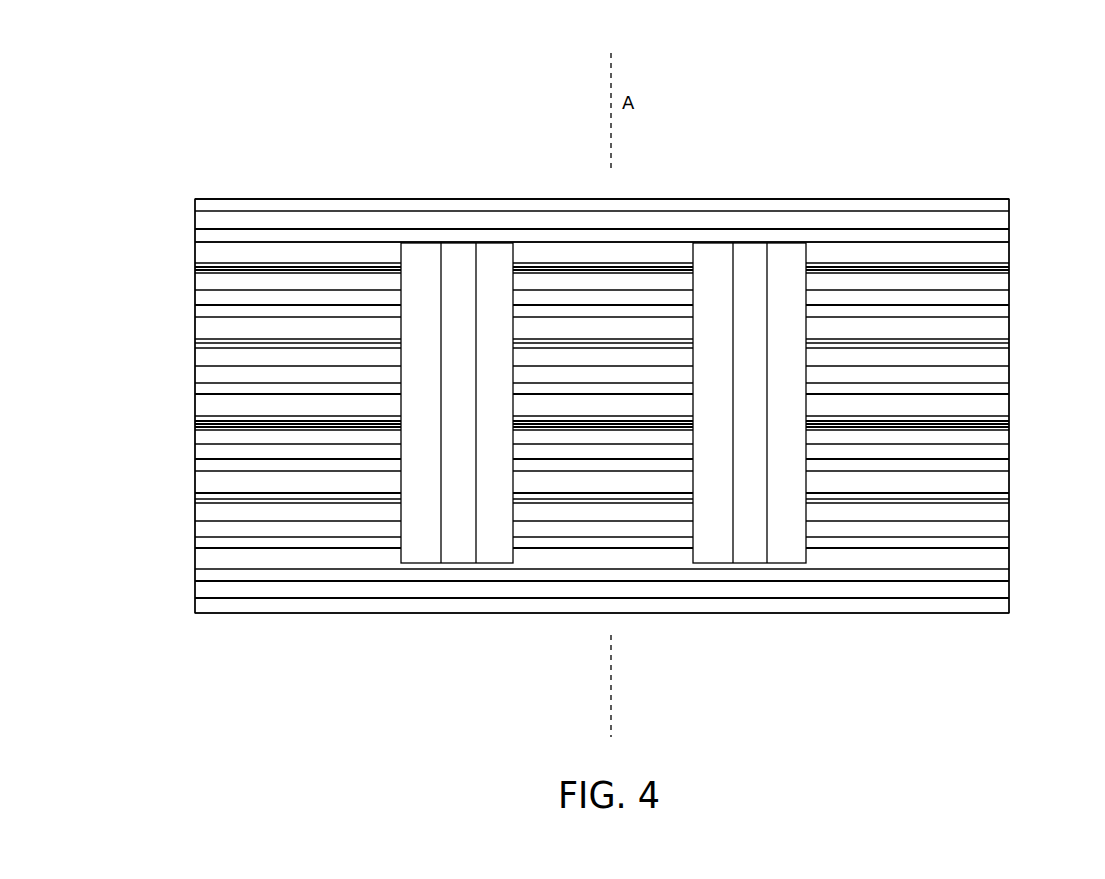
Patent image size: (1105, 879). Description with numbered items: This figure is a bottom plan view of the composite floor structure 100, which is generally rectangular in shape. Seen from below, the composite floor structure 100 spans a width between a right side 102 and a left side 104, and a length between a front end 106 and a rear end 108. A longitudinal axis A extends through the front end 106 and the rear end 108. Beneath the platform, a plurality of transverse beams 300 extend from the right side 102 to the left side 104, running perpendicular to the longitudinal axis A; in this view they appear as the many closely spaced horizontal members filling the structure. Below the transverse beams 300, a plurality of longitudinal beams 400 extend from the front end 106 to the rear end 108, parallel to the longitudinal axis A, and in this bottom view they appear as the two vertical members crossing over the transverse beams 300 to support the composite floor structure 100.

The composite floor structure 100 is at (977, 107).
The right side 102 is at (196, 398).
The left side 104 is at (1010, 411).
The front end 106 is at (767, 198).
The rear end 108 is at (779, 614).
The transverse beams 300 is at (1000, 222).
The longitudinal beams 400 is at (463, 263).